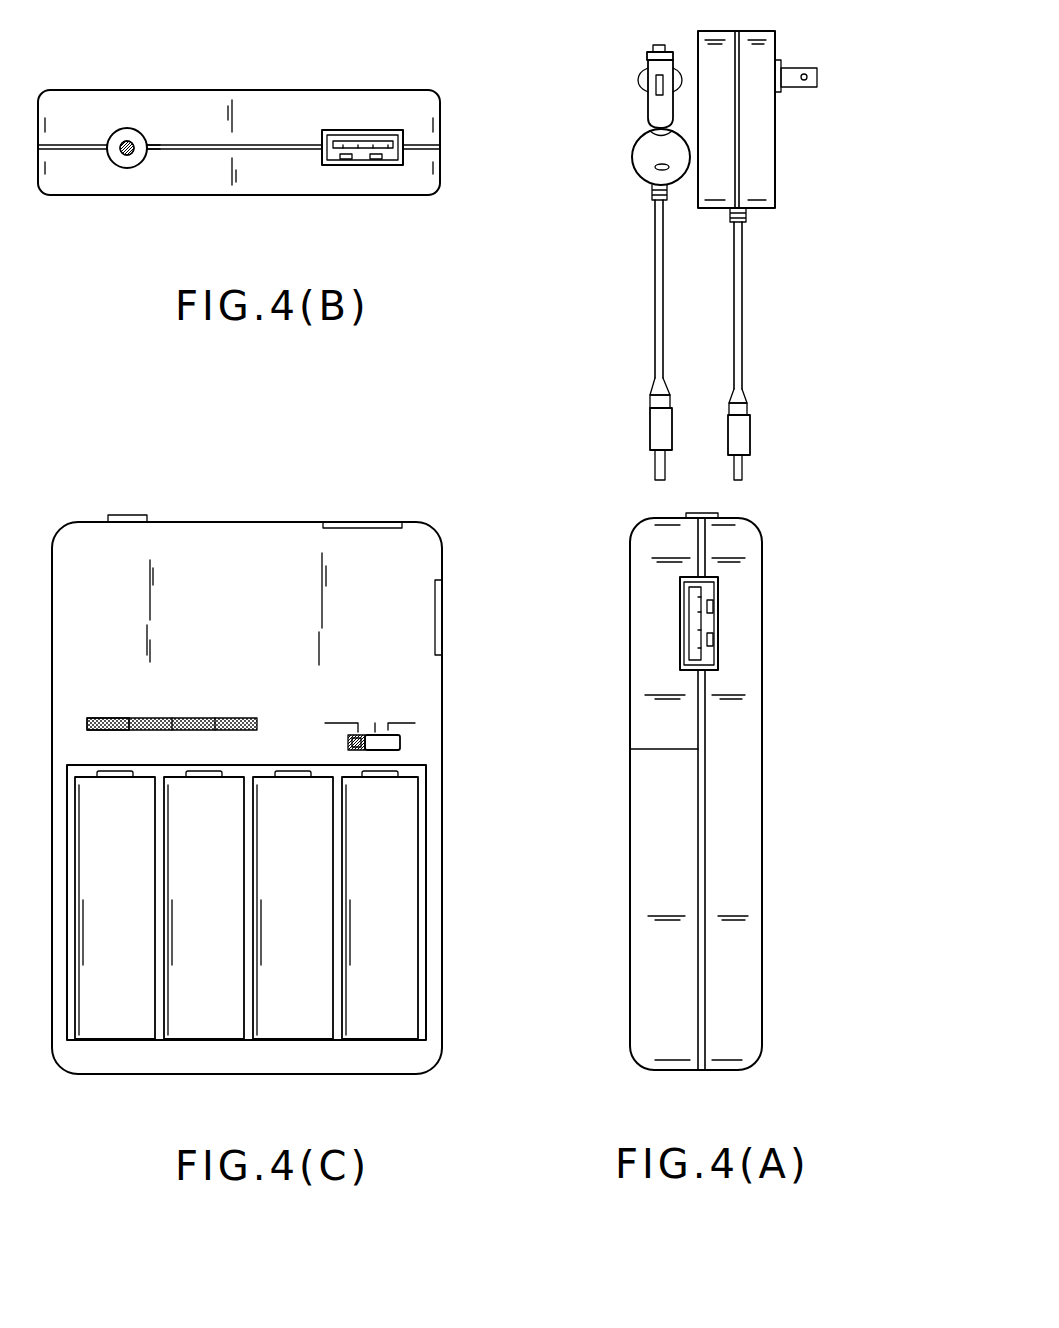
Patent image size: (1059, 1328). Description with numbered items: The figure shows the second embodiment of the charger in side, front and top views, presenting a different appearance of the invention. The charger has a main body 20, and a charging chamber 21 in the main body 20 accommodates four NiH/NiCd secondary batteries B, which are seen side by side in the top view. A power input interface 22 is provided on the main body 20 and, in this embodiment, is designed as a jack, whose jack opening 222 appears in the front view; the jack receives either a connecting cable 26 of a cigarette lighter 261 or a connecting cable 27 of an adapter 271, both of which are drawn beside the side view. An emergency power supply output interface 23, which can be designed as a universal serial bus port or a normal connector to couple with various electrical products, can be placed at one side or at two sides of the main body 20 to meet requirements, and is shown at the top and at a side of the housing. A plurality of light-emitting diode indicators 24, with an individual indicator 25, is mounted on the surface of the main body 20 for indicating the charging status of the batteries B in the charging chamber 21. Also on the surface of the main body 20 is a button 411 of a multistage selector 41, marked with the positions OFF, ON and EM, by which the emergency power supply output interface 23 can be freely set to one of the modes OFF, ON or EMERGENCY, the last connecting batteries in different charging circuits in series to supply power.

In FIG. 4B, the main body 20 is at (273, 110).
In FIG. 4A, the main body 20 is at (735, 716).
In FIG. 4C, the main body 20 is at (432, 996).
In FIG. 4C, the charging chamber 21 is at (415, 887).
In FIG. 4B, the power input interface 22 is at (163, 133).
In FIG. 4A, the power input interface 22 is at (735, 508).
In FIG. 4B, the charging jack 222 is at (127, 128).
In FIG. 4B, the emergency power supply output interface 23 is at (365, 152).
In FIG. 4A, the emergency power supply output interface 23 is at (705, 622).
In FIG. 4C, the emergency power supply output interface 23 is at (368, 522).
In FIG. 4C, the light-emitting diode indicators 24 is at (158, 720).
In FIG. 4C, the indicator light 25 is at (110, 720).
In FIG. 4A, the connecting cable 26 is at (630, 262).
In FIG. 4A, the cigarette lighter 261 is at (655, 108).
In FIG. 4A, the connecting cable 27 is at (782, 255).
In FIG. 4A, the adapter 271 is at (758, 156).
In FIG. 4C, the multistage selector 41 is at (392, 750).
In FIG. 4C, the button 411 is at (357, 750).
In FIG. 4C, the secondary batteries B is at (400, 950).